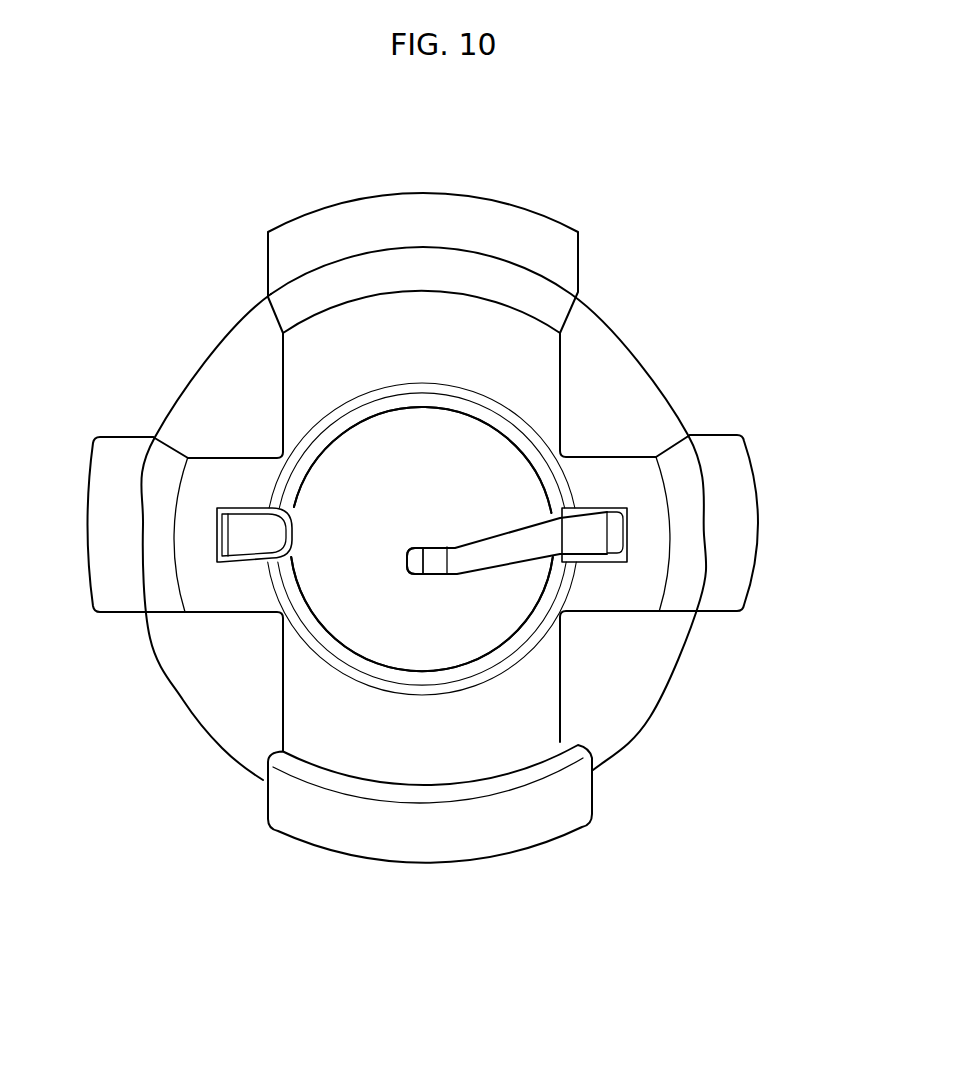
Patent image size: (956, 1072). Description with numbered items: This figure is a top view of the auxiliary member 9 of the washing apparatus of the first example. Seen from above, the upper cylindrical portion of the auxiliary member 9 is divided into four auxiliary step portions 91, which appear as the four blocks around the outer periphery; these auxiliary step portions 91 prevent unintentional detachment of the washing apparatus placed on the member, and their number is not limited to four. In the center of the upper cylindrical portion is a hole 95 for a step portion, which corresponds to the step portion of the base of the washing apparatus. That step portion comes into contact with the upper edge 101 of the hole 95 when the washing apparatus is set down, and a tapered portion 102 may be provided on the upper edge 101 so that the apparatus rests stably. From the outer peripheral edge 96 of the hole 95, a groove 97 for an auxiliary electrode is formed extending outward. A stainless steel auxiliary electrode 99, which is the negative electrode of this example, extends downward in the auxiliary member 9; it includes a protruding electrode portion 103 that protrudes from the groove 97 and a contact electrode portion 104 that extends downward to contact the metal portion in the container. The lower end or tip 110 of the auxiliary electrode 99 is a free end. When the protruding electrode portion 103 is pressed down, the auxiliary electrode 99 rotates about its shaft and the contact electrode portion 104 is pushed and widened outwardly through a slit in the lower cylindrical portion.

The auxiliary member 9 is at (624, 240).
The auxiliary step portion 91 is at (448, 222).
The hole for a step portion 95 is at (485, 610).
The outer peripheral edge 96 is at (543, 587).
The groove for an auxiliary electrode 97 is at (590, 507).
The auxiliary electrode 99 is at (458, 555).
The upper edge 101 is at (300, 628).
The tapered portion 102 is at (327, 644).
The protruding electrode portion 103 is at (257, 535).
The contact electrode portion 104 is at (508, 543).
The lower end (tip) 110 is at (418, 565).